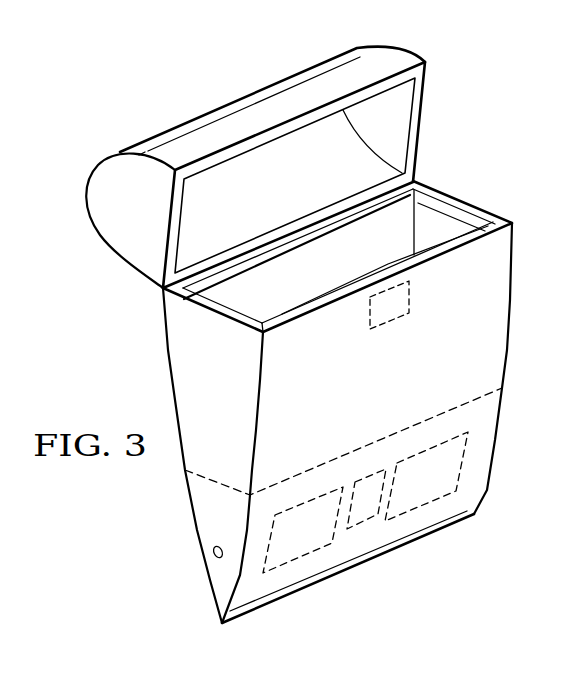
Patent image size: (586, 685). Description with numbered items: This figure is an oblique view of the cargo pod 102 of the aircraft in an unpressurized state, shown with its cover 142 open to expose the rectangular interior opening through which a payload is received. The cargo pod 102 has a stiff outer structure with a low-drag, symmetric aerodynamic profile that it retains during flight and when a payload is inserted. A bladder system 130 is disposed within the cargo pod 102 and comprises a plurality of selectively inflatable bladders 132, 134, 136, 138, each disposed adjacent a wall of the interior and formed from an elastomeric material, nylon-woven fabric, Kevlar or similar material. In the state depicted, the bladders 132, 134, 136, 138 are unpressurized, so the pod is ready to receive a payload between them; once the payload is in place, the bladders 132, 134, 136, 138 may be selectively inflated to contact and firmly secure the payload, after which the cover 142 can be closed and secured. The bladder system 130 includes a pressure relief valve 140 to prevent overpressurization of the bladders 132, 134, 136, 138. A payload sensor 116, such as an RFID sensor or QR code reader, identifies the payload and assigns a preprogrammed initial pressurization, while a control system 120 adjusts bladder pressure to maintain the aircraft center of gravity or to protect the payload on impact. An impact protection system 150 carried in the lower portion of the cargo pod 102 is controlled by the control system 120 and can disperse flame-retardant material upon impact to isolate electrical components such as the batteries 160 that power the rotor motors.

The cargo pod 102 is at (133, 69).
The payload sensor 116 is at (393, 318).
The control system 120 is at (360, 520).
The bladder system 130 is at (436, 224).
The bladder 132 is at (312, 242).
The bladder 134 is at (345, 281).
The bladder 136 is at (428, 213).
The bladder 138 is at (206, 298).
The pressure relief valve 140 is at (210, 553).
The cover 142 is at (232, 102).
The impact protection system 150 is at (290, 566).
The batteries 160 is at (428, 505).